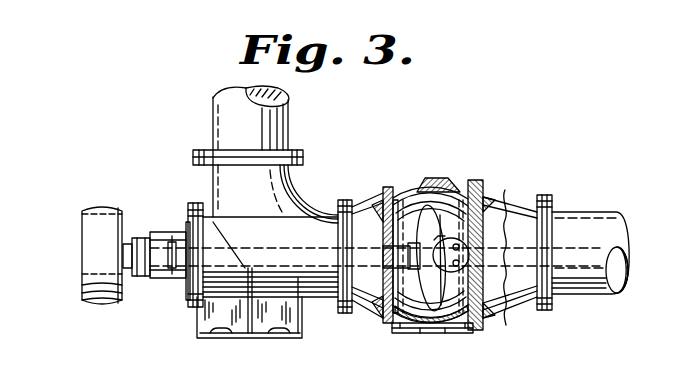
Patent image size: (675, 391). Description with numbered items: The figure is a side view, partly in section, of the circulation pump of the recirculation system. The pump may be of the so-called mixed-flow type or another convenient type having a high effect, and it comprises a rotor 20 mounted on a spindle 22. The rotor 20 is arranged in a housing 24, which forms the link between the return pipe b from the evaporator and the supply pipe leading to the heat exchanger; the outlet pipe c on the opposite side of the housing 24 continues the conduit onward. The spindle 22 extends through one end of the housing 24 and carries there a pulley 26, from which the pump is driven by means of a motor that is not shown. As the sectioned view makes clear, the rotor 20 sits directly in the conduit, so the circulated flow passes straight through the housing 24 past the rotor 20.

The rotor 20 is at (443, 245).
The spindle 22 is at (172, 270).
The housing 24 is at (381, 286).
The pulley 26 is at (103, 307).
The return pipe b is at (282, 125).
The outlet pipe c is at (583, 281).